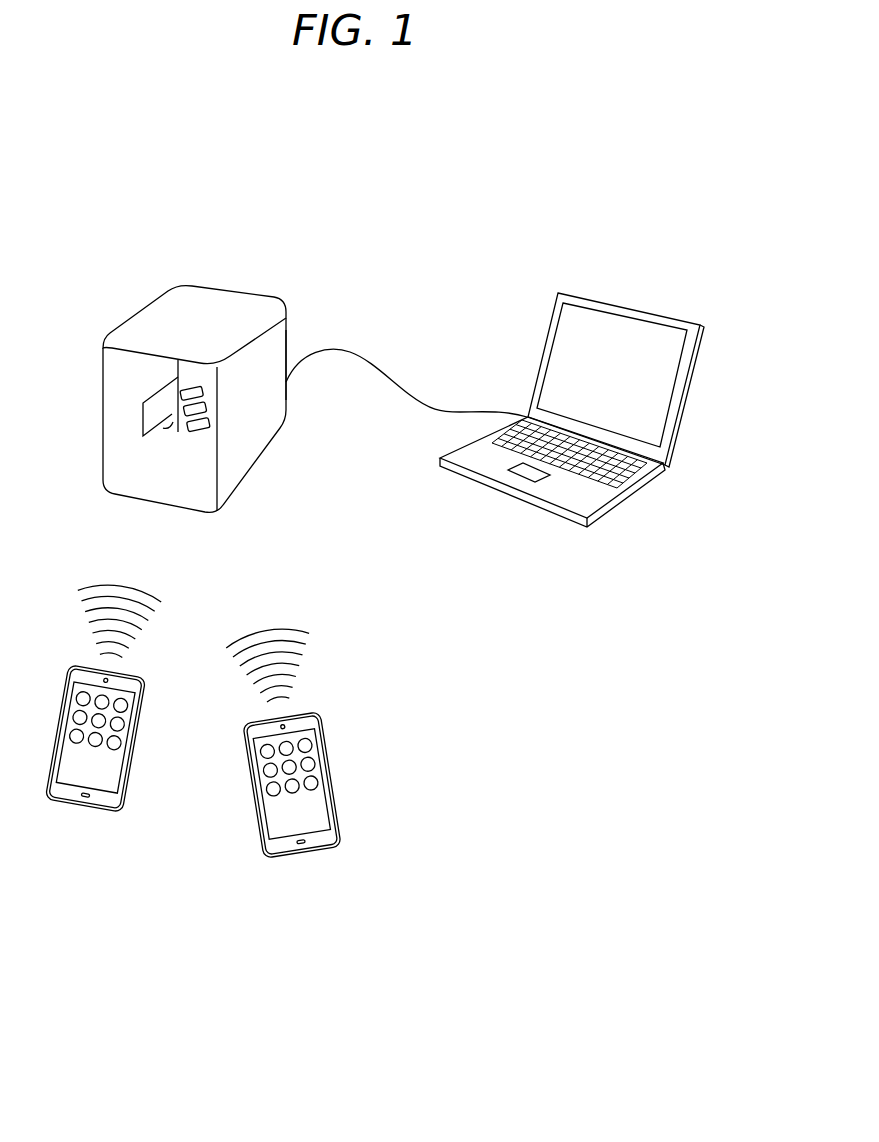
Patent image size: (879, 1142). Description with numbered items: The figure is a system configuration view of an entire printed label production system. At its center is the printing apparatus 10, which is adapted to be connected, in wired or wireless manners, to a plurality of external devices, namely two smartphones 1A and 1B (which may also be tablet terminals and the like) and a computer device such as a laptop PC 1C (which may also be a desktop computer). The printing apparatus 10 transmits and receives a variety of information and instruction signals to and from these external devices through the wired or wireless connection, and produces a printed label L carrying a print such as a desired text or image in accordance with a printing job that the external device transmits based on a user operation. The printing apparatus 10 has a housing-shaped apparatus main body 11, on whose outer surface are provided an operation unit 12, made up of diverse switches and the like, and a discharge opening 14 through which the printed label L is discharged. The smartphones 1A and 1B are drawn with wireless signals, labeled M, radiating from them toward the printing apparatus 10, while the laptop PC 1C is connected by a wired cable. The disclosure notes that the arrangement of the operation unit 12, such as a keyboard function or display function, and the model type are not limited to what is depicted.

The printing apparatus 10 is at (213, 393).
The apparatus main body 11 is at (242, 460).
The operation unit 12 is at (214, 412).
The discharge opening 14 is at (165, 370).
The printed label L is at (143, 418).
The cut marks M is at (98, 582).
The smartphone 1A is at (87, 837).
The smartphone 1B is at (302, 887).
The laptop PC 1C is at (634, 521).